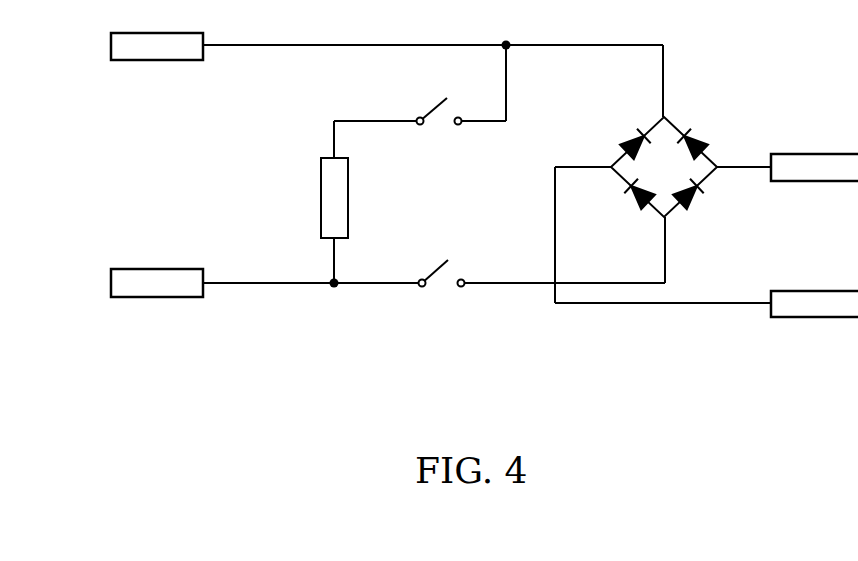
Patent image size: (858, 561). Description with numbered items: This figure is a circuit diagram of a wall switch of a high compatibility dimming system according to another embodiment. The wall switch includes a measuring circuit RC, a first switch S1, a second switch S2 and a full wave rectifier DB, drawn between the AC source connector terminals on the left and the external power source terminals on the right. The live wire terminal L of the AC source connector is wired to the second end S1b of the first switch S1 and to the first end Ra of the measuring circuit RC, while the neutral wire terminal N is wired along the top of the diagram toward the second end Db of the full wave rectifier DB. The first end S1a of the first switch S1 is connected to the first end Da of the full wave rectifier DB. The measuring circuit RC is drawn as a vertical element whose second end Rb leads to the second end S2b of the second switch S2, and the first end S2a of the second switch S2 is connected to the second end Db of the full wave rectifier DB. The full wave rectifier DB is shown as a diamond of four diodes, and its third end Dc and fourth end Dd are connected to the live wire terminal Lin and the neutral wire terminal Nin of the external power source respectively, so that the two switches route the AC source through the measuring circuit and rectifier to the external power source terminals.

The neutral wire terminal N is at (157, 46).
The live wire terminal L is at (157, 283).
The neutral wire terminal of external power source Nin is at (814, 167).
The live wire terminal of external power source Lin is at (814, 304).
The measuring circuit RC is at (315, 198).
The first end of measuring circuit Ra is at (320, 260).
The second end of measuring circuit Rb is at (320, 139).
The first switch S1 is at (447, 257).
The first end of first switch S1a is at (483, 270).
The second end of first switch S1b is at (408, 270).
The second switch S2 is at (446, 97).
The first end of second switch S2a is at (481, 109).
The second end of second switch S2b is at (406, 109).
The full wave rectifier DB is at (665, 165).
The first end of full wave rectifier Da is at (645, 208).
The second end of full wave rectifier Db is at (690, 125).
The third end of full wave rectifier Dc is at (614, 148).
The fourth end of full wave rectifier Dd is at (712, 175).